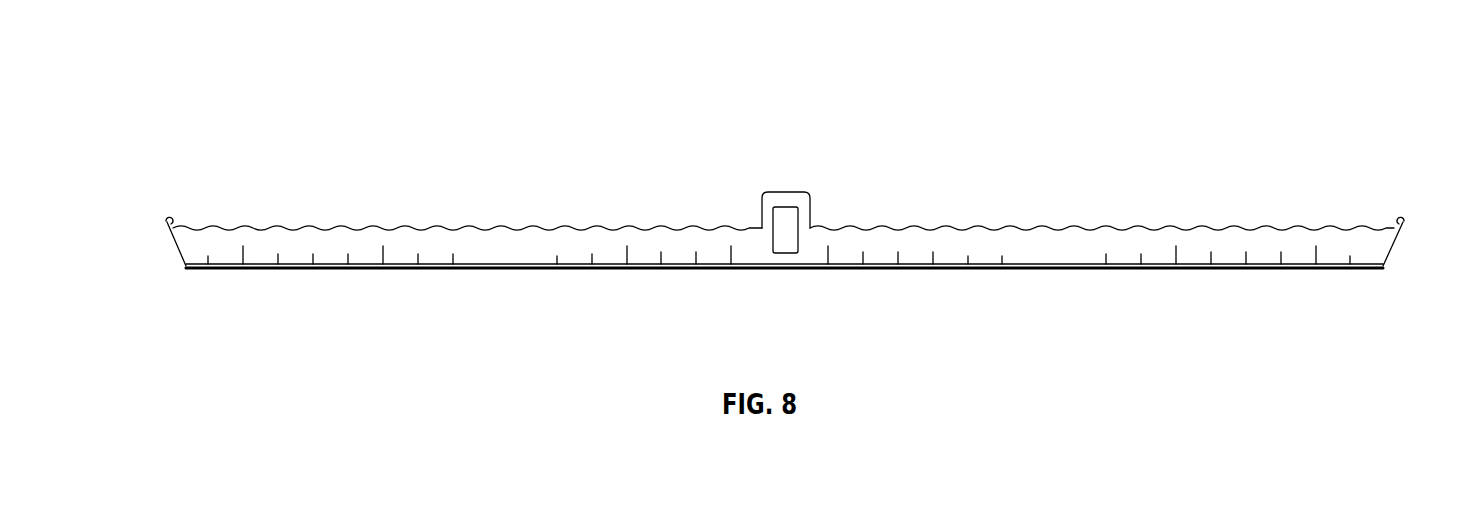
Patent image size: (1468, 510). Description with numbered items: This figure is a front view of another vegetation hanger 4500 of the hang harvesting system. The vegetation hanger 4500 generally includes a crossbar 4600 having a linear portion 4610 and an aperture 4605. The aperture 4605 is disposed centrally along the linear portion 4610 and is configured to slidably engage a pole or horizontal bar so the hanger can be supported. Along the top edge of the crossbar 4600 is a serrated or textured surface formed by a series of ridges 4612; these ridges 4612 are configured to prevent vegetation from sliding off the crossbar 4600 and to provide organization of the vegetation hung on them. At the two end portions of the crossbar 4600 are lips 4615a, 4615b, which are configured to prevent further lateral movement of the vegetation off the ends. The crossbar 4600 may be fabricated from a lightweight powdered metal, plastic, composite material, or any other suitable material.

The vegetation hanger 4500 is at (1295, 61).
The crossbar 4600 is at (1065, 98).
The aperture 4605 is at (787, 215).
The linear portion 4610 is at (500, 240).
The series of ridges 4612 is at (400, 229).
The lip 4615a is at (1404, 220).
The lip 4615b is at (167, 222).